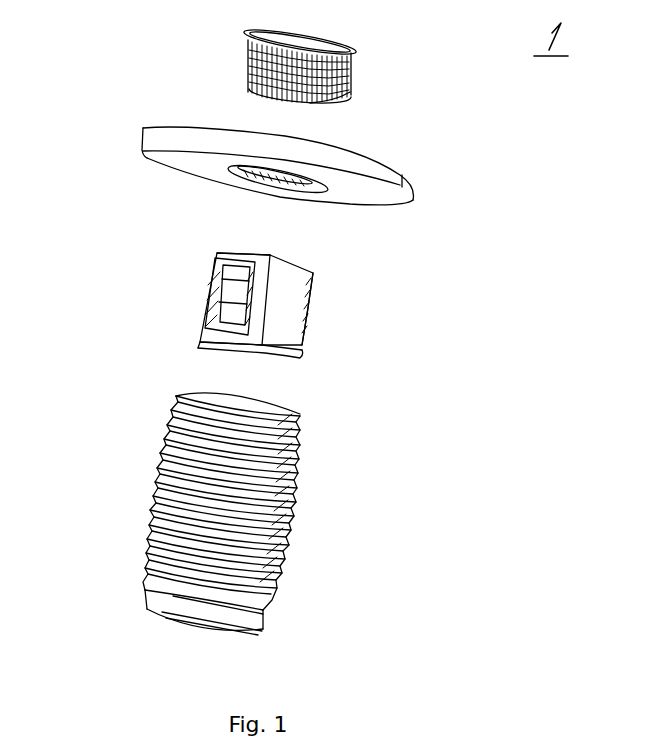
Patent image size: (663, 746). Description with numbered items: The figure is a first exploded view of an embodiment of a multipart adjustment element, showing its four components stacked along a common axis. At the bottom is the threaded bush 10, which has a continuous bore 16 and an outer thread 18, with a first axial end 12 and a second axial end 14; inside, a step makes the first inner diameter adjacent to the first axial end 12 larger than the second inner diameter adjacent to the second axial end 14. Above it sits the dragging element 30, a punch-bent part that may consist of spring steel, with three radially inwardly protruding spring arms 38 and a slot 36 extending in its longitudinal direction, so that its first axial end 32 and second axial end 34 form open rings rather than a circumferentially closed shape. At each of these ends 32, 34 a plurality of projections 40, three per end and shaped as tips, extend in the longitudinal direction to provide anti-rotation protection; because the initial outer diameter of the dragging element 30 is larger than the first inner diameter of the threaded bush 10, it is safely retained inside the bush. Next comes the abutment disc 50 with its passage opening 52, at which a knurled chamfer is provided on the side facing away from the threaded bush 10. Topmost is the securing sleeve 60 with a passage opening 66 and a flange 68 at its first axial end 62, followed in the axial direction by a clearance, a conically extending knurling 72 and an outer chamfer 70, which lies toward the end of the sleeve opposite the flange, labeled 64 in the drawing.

The threaded bush 10 is at (254, 529).
The first axial end 12 is at (302, 412).
The second axial end 14 is at (263, 628).
The continuous bore 16 is at (197, 621).
The outer thread 18 is at (157, 500).
The dragging element 30 is at (272, 314).
The first axial end 32 is at (273, 355).
The second axial end 34 is at (313, 270).
The slot 36 is at (280, 358).
The spring arms 38 is at (215, 287).
The projections 40 is at (272, 256).
The abutment disc 50 is at (279, 166).
The passage opening 52 is at (232, 179).
The securing sleeve 60 is at (241, 64).
The first axial end 62 is at (357, 50).
The lower flange of nut 64 is at (347, 100).
The passage opening 66 is at (338, 103).
The flange 68 is at (247, 33).
The outer chamfer 70 is at (248, 83).
The conically extending knurling 72 is at (248, 60).